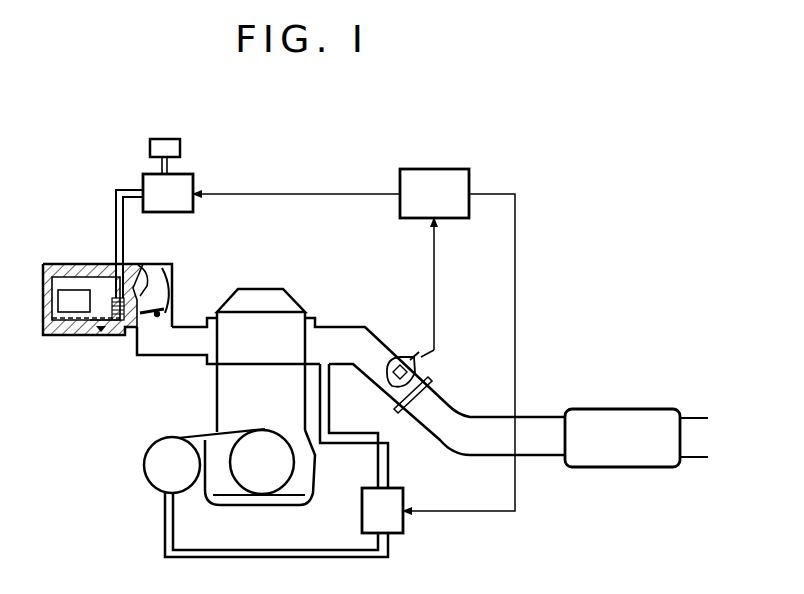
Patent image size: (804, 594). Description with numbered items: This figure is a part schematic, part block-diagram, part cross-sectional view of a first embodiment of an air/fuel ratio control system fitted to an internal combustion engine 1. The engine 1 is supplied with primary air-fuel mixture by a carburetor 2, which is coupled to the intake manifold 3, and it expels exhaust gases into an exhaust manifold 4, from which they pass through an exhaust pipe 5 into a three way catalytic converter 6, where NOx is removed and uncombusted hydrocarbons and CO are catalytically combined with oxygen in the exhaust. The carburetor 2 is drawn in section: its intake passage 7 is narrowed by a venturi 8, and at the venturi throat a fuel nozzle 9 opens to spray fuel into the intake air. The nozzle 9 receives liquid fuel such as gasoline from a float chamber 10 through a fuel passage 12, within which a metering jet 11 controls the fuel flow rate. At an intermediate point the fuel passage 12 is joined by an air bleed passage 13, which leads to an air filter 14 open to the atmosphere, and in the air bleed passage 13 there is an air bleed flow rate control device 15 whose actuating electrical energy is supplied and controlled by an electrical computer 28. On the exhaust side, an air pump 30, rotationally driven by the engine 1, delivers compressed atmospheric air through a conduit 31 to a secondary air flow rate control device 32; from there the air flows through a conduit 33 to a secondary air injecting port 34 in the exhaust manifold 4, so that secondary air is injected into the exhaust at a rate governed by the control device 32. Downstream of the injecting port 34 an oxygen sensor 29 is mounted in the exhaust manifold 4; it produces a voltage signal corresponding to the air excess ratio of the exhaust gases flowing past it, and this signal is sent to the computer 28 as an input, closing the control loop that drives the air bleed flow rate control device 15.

The internal combustion engine 1 is at (260, 299).
The carburetor 2 is at (172, 266).
The intake manifold 3 is at (173, 354).
The exhaust manifold 4 is at (346, 338).
The exhaust pipe 5 is at (453, 414).
The three way catalytic converter 6 is at (620, 417).
The intake passage 7 is at (177, 306).
The venturi 8 is at (172, 278).
The fuel nozzle 9 is at (153, 265).
The float chamber 10 is at (59, 335).
The metering jet 11 is at (101, 328).
The fuel passage 12 is at (121, 327).
The air bleed passage 13 is at (116, 232).
The air filter 14 is at (163, 139).
The air bleed flow rate control device 15 is at (193, 180).
The electrical computer 28 is at (430, 175).
The oxygen sensor 29 is at (401, 357).
The air pump 30 is at (148, 448).
The conduit 31 is at (263, 552).
The secondary air flow rate control device 32 is at (397, 525).
The conduit 33 is at (388, 462).
The secondary air injecting port 34 is at (325, 364).